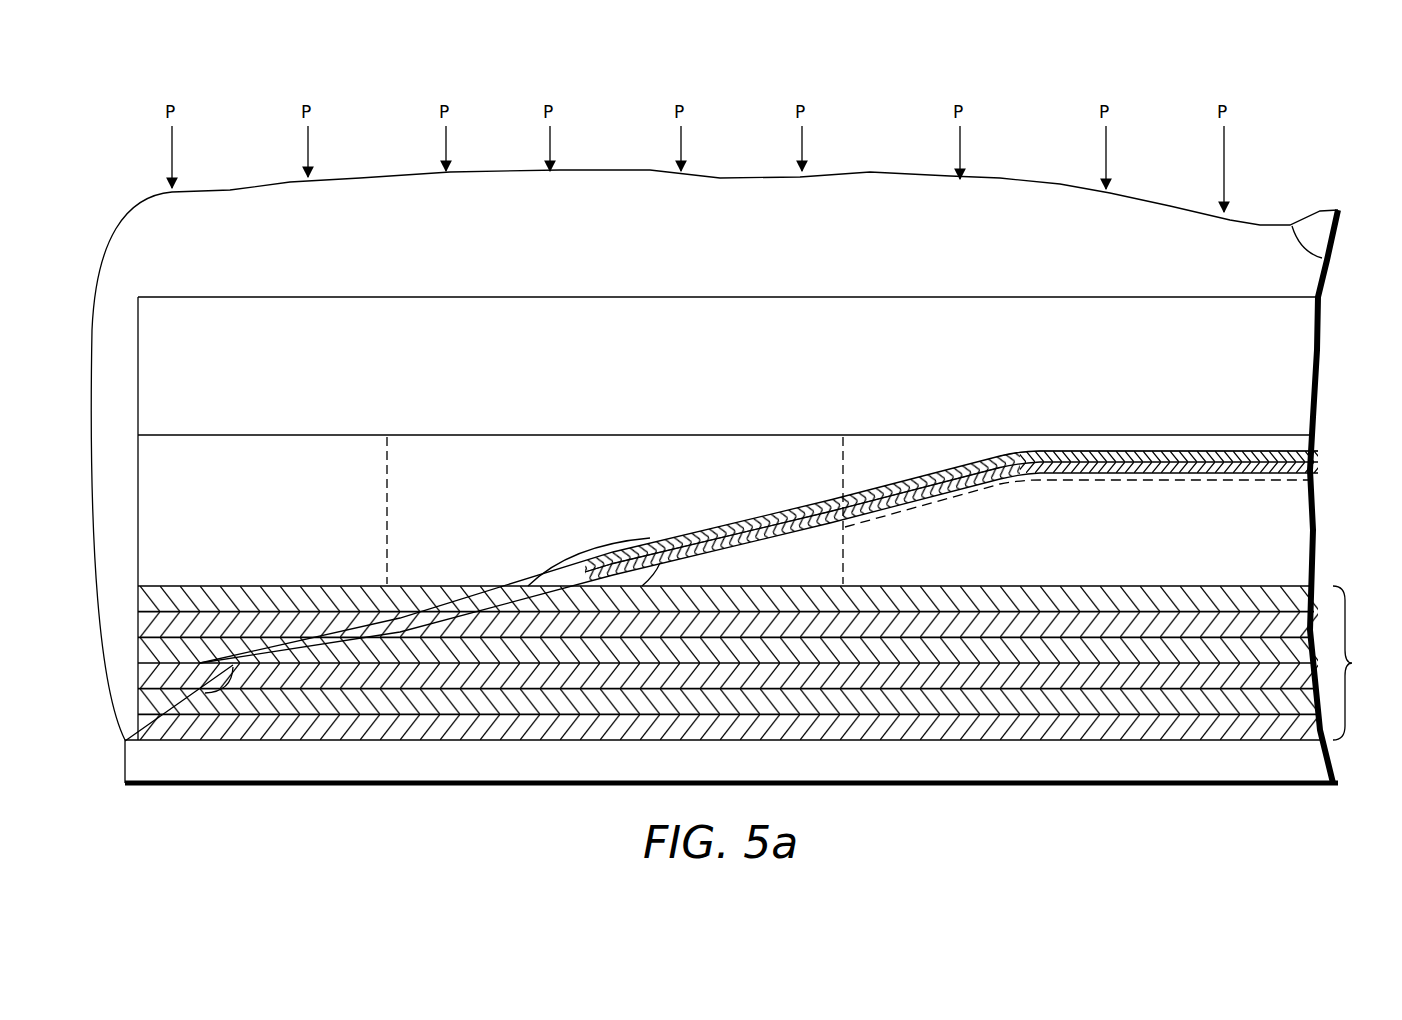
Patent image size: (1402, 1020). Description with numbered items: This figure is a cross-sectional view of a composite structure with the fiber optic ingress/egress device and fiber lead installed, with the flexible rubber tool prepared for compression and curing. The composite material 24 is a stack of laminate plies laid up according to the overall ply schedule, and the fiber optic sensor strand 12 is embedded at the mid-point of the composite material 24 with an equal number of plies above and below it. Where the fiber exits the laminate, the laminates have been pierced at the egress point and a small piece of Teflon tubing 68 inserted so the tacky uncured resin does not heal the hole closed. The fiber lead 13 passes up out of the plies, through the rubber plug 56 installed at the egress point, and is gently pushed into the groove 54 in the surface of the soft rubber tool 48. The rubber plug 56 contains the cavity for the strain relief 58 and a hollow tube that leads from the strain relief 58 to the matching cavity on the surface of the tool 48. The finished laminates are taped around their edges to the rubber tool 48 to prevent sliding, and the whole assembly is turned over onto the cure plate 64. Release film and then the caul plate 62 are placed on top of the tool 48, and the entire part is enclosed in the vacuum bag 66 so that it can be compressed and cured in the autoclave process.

The fiber optic sensor strand 12 is at (125, 741).
The fiber lead 13 is at (908, 480).
The composite material 24 is at (762, 663).
The soft rubber tool 48 is at (1280, 522).
The grooves 54 is at (990, 452).
The rubber plugs 56 is at (690, 458).
The strain relief 58 is at (585, 549).
The caul plate 62 is at (1280, 370).
The cure plate 64 is at (345, 770).
The vacuum bag 66 is at (1330, 262).
The Teflon tubing 68 is at (812, 500).